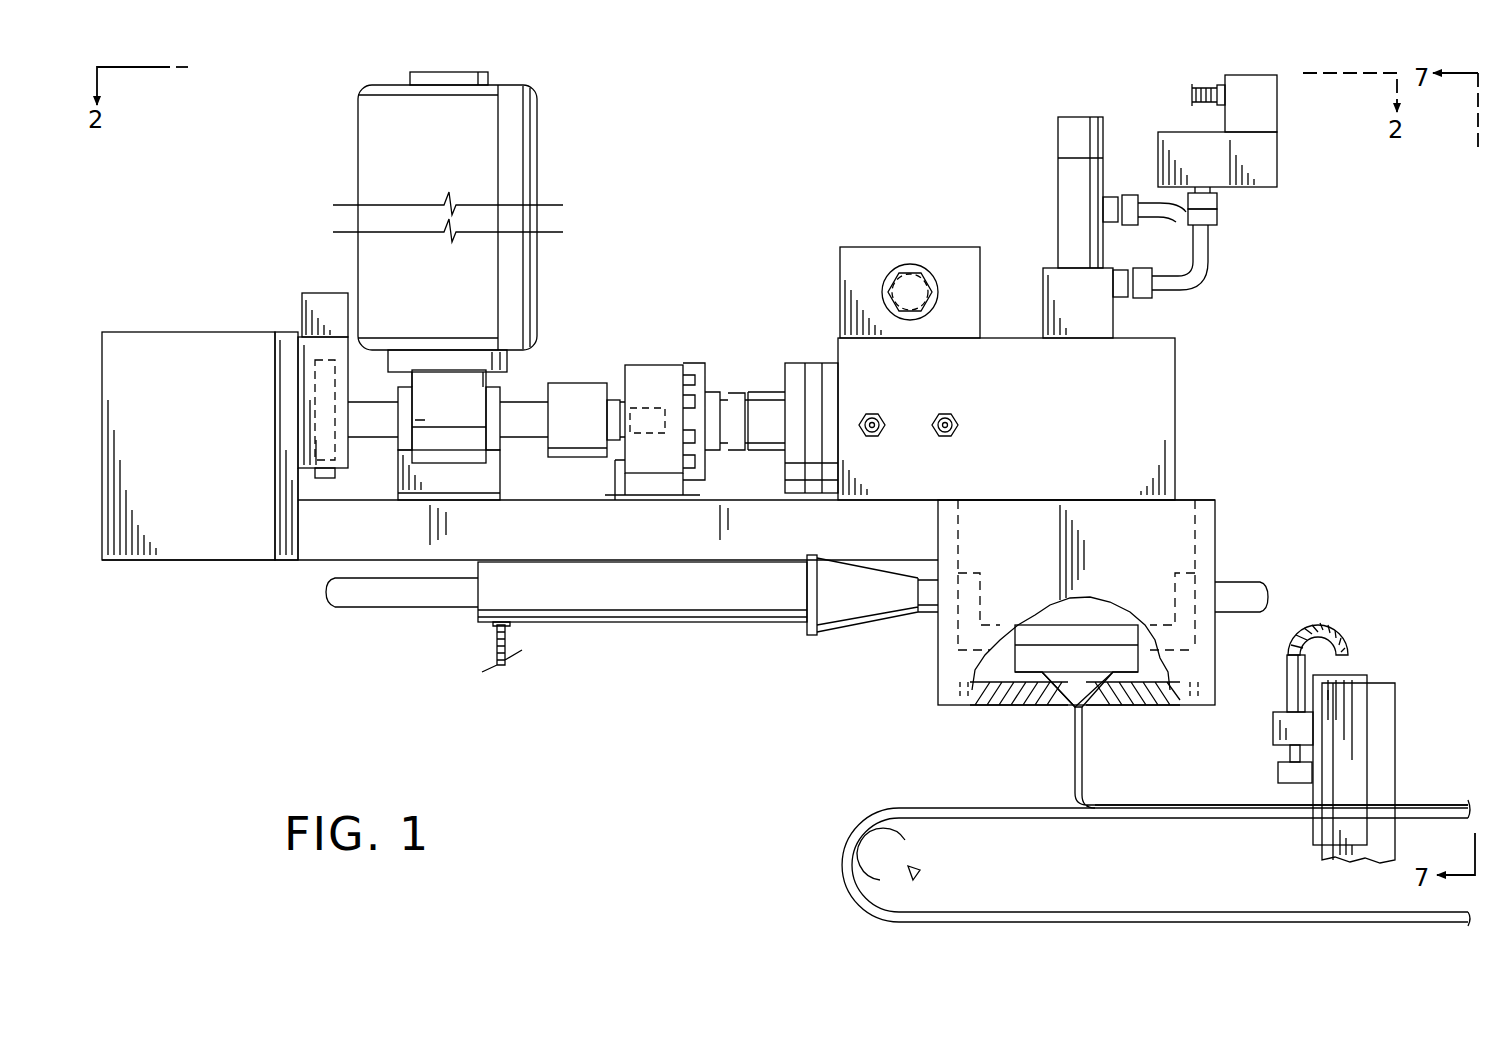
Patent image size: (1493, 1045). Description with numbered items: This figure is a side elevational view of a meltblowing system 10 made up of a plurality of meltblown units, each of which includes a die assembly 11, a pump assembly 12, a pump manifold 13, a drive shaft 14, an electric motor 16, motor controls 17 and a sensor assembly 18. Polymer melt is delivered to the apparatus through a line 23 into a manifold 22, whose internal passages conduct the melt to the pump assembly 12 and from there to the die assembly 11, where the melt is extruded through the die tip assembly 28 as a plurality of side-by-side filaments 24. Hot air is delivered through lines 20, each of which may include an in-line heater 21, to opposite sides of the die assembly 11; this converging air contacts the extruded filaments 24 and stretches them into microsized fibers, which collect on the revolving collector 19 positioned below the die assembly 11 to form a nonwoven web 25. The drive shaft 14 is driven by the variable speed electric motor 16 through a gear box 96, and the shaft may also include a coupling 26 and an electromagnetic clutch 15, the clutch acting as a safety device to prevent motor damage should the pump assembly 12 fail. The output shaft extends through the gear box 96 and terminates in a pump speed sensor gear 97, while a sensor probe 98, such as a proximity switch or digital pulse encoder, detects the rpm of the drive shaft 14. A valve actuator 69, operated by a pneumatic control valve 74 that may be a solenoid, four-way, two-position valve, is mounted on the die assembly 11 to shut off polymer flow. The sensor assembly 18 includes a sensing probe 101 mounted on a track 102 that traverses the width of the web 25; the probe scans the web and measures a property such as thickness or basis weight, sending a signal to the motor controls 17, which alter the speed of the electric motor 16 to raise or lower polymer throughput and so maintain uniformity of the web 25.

The meltblowing system 10 is at (767, 168).
The die assembly 11 is at (1180, 372).
The pump assembly 12 is at (808, 365).
The pump manifold 13 is at (947, 360).
The drive shaft 14 is at (518, 415).
The electromagnetic clutch 15 is at (660, 383).
The electric motor 16 is at (527, 118).
The motor controls 17 is at (200, 450).
The sensor assembly 18 is at (1380, 680).
The revolving collector 19 is at (963, 808).
The hot air lines 20 is at (405, 600).
The in-line heater 21 is at (665, 600).
The manifold 22 is at (865, 258).
The line 23 is at (913, 270).
The filaments 24 is at (1082, 760).
The nonwoven web 25 is at (1152, 808).
The coupling 26 is at (580, 405).
The die tip assembly 28 is at (1068, 712).
The valve actuator 69 is at (1070, 148).
The pneumatic control valve 74 is at (1188, 147).
The gear box 96 is at (445, 402).
The pump speed sensor gear 97 is at (317, 363).
The sensor probe 98 is at (323, 308).
The sensing probe 101 is at (1292, 685).
The track 102 is at (1385, 720).